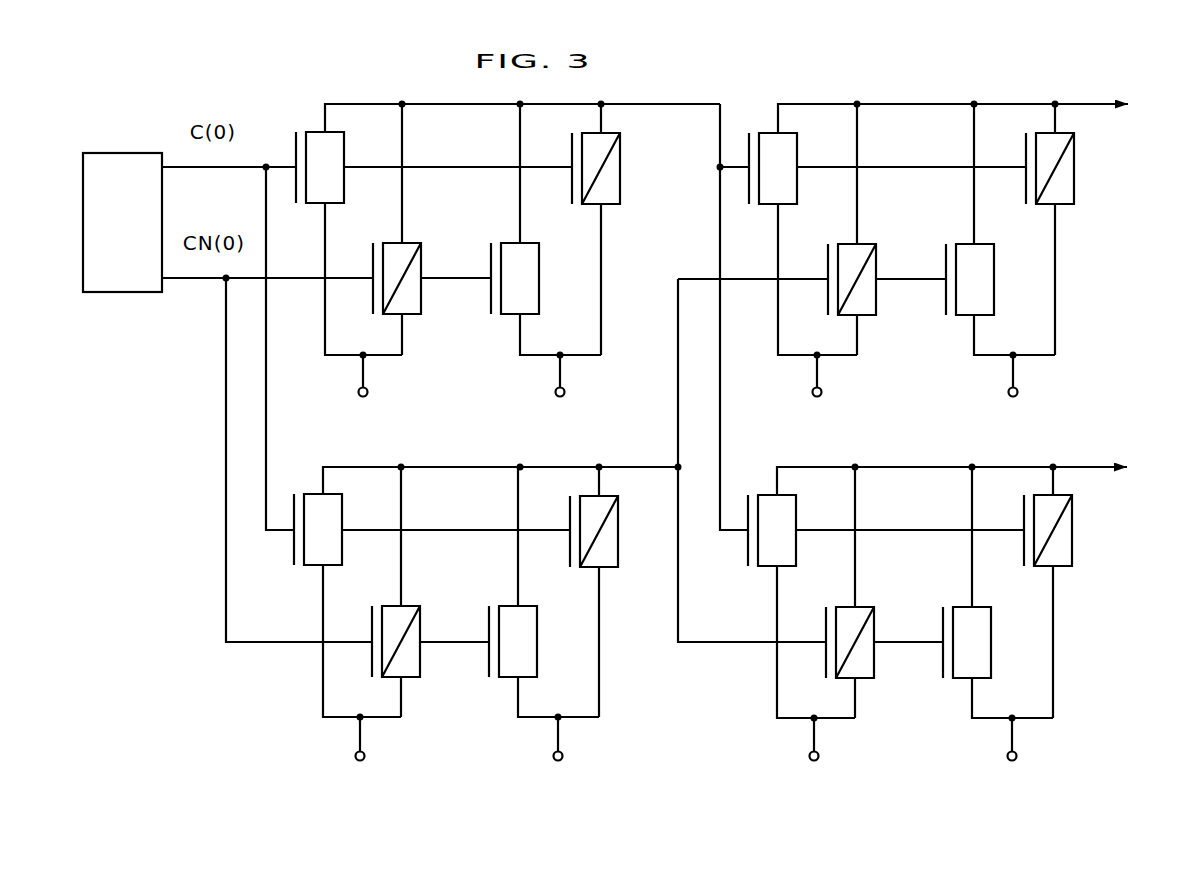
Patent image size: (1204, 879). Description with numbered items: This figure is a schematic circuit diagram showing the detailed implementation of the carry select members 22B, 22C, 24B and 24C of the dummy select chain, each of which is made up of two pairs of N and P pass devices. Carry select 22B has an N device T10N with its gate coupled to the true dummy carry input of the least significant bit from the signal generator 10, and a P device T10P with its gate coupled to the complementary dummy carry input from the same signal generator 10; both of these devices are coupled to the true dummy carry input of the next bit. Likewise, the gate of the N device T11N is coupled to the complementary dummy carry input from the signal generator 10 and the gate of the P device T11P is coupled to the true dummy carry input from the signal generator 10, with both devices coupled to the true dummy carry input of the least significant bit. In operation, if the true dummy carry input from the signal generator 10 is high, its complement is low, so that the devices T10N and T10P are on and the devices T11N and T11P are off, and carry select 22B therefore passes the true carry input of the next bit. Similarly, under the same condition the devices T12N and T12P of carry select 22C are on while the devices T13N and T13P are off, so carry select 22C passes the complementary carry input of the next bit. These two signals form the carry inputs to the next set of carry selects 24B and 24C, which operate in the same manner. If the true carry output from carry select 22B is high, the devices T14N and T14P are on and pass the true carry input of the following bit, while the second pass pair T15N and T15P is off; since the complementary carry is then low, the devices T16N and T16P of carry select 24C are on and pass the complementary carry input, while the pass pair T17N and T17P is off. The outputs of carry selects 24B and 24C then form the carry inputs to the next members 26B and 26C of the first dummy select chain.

The signal generator 10 is at (110, 233).
The carry select 22B is at (270, 118).
The carry select 22C is at (277, 683).
The carry select 24B is at (773, 102).
The carry select 24C is at (752, 692).
The member of first dummy select chain 26B is at (1122, 98).
The member of first dummy select chain 26C is at (1167, 130).
The N device T10N is at (333, 157).
The P device T10P is at (417, 270).
The N device T11N is at (522, 292).
The P device T11P is at (610, 182).
The N device T12N is at (332, 520).
The P device T12P is at (398, 618).
The N device T13N is at (517, 660).
The P device T13P is at (613, 538).
The N device T14N is at (785, 158).
The P device T14P is at (870, 267).
The N device T15N is at (978, 298).
The P device T15P is at (1068, 160).
The N device T16N is at (787, 517).
The P device T16P is at (868, 635).
The N device T17N is at (972, 652).
The P device T17P is at (1060, 533).